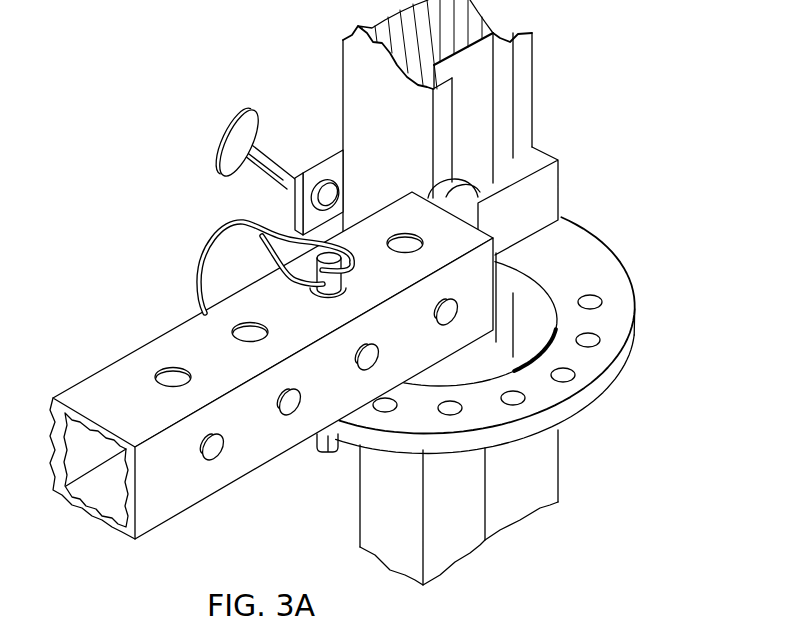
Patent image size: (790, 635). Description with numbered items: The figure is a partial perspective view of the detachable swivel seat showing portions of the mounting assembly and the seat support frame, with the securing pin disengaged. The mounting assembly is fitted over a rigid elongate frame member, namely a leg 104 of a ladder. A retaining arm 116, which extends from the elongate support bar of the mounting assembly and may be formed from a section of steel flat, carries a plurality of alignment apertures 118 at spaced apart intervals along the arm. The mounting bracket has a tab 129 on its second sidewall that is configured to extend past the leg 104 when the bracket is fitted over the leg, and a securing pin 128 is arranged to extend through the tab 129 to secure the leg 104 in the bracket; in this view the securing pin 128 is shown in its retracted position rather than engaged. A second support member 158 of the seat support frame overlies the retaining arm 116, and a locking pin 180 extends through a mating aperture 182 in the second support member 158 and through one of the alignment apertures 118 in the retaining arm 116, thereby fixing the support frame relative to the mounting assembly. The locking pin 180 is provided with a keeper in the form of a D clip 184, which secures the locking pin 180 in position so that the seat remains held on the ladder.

The leg 104 is at (532, 93).
The retaining arm 116 is at (596, 238).
The alignment apertures 118 is at (590, 297).
The securing pin 128 is at (224, 130).
The tab 129 is at (324, 158).
The second support member 158 is at (118, 360).
The locking pin 180 is at (330, 453).
The mating aperture 182 is at (344, 277).
The D clip 184 is at (203, 240).